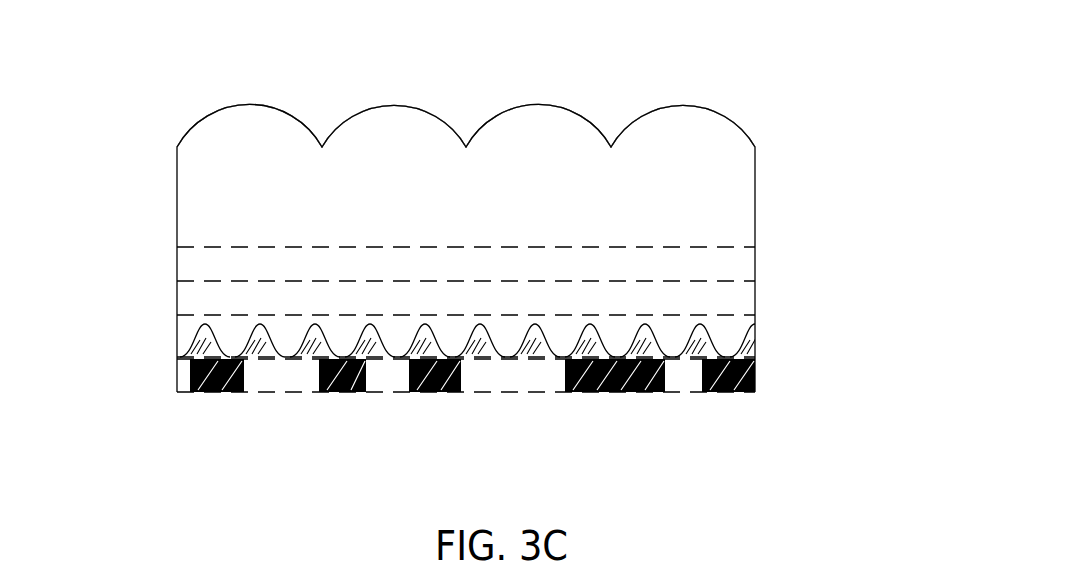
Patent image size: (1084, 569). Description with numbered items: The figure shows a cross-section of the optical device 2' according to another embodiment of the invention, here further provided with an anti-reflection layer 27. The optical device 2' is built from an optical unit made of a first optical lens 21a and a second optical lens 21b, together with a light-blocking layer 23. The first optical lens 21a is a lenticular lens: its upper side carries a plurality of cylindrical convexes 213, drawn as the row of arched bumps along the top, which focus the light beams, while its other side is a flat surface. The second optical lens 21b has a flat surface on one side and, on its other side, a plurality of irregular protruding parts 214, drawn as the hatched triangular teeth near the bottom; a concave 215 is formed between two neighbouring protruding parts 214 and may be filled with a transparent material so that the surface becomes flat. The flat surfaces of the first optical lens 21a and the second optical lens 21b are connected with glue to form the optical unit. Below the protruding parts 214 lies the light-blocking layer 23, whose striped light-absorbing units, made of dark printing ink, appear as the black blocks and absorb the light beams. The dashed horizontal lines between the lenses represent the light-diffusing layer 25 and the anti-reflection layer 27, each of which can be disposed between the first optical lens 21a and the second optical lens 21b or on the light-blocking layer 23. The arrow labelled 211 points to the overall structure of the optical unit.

The optical device 2' is at (51, 10).
The light guide plate 211 is at (682, 89).
The cylindrical convexes 213 is at (250, 103).
The irregular protruding parts 214 is at (237, 343).
The concave 215 is at (192, 345).
The first optical lens 21a is at (740, 188).
The second optical lens 21b is at (732, 324).
The light-blocking layer 23 is at (755, 379).
The light-diffusing layer 25 is at (745, 268).
The anti-reflection layer 27 is at (745, 304).